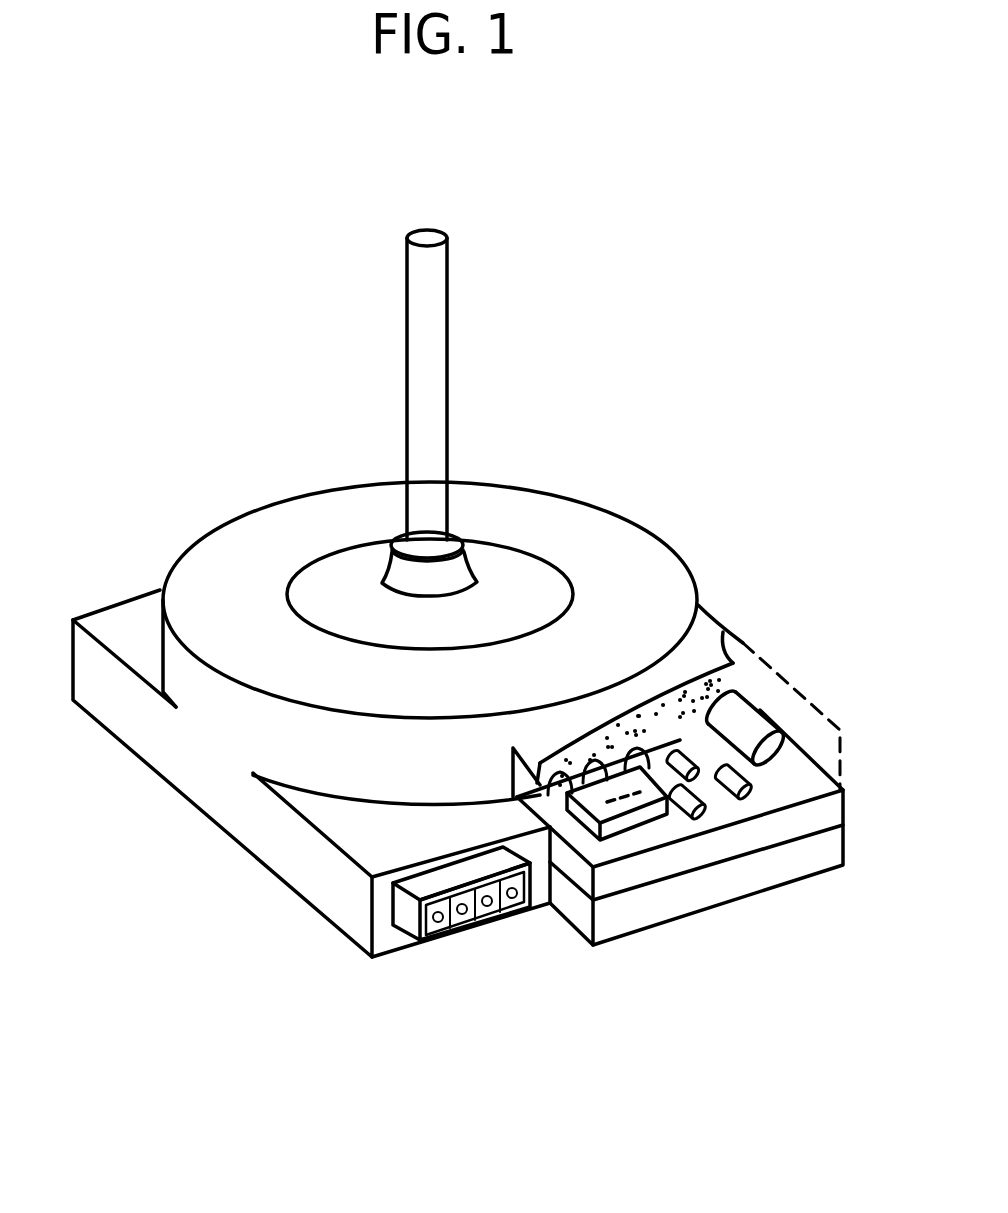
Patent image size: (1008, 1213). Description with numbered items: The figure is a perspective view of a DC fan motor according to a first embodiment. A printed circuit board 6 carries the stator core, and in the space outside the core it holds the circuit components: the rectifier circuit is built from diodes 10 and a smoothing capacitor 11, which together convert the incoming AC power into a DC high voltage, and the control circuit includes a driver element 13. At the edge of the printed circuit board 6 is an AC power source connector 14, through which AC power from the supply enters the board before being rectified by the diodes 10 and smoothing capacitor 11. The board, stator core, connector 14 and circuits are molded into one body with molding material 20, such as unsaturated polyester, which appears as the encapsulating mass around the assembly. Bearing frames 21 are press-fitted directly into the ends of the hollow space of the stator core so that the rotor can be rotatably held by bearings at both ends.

The printed circuit board 6 is at (802, 812).
The diodes 10 is at (690, 803).
The smoothing capacitor 11 is at (747, 722).
The driver element 13 is at (612, 807).
The AC power source connector 14 is at (423, 943).
The molding material 20 is at (727, 678).
The bearing frames 21 is at (455, 572).